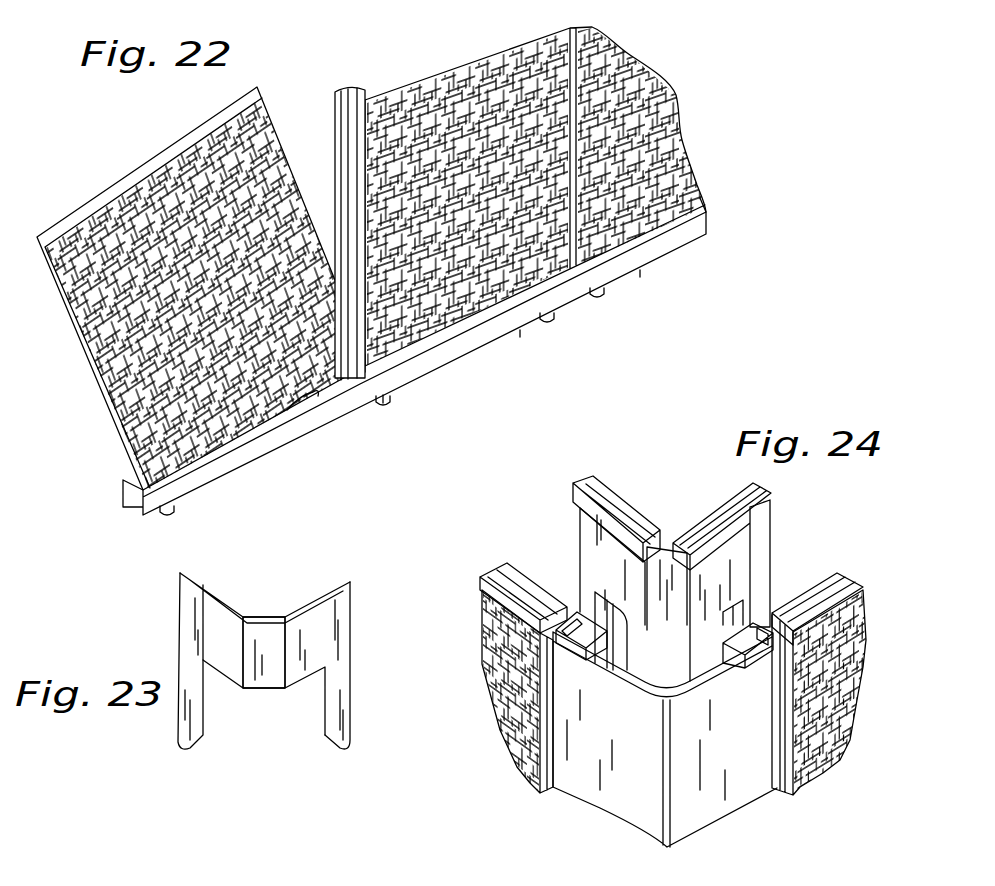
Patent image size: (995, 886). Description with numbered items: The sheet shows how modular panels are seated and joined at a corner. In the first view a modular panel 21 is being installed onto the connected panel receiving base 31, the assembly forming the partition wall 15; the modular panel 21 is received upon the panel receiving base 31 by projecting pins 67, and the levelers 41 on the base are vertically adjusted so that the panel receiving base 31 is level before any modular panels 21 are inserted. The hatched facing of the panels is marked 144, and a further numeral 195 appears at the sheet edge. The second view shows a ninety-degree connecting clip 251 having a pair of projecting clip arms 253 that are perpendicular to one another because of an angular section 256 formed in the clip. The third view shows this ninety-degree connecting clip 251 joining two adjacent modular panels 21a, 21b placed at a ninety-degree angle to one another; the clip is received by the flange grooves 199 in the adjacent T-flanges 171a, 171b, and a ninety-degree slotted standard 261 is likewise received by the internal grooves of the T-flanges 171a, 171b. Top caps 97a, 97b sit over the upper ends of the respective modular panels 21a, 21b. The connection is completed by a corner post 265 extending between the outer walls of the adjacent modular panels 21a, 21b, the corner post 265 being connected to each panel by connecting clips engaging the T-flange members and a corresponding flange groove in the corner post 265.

In FIG. 22, the partition wall 15 is at (338, 58).
In FIG. 22, the modular panel 21 is at (97, 177).
In FIG. 22, the panel receiving base 31 is at (227, 467).
In FIG. 22, the leveler 41 is at (170, 508).
In FIG. 22, the projecting pin 67 is at (300, 405).
In FIG. 22, the panel facing surface 144 is at (113, 364).
In FIG. 24, the panel facing surface 144 is at (487, 618).
In FIG. 23, the 90° connecting clip 251 is at (192, 617).
In FIG. 24, the 90° connecting clip 251 is at (557, 597).
In FIG. 23, the projecting clip arm 253 is at (182, 730).
In FIG. 23, the angular section 256 is at (262, 612).
In FIG. 23, the reference numeral 195 is at (153, 876).
In FIG. 24, the modular panel 21a is at (553, 518).
In FIG. 24, the modular panel 21b is at (791, 527).
In FIG. 24, the first panel top cap 97a is at (620, 495).
In FIG. 24, the second panel top cap 97b is at (717, 507).
In FIG. 24, the flange groove 199 is at (603, 592).
In FIG. 24, the T-flange 171a is at (617, 648).
In FIG. 24, the T-flange 171b is at (762, 627).
In FIG. 24, the 90° slotted standard 261 is at (657, 680).
In FIG. 24, the corner post 265 is at (737, 790).